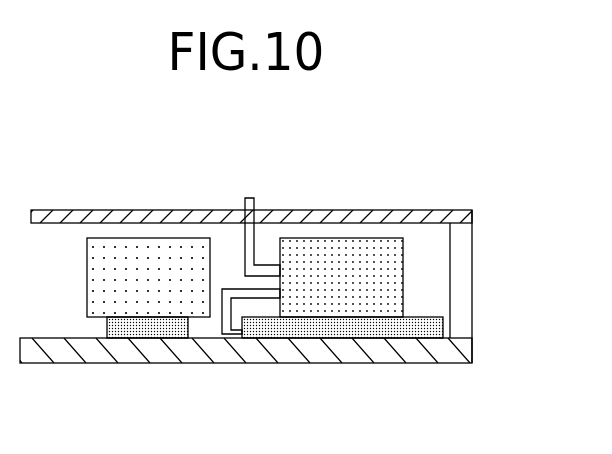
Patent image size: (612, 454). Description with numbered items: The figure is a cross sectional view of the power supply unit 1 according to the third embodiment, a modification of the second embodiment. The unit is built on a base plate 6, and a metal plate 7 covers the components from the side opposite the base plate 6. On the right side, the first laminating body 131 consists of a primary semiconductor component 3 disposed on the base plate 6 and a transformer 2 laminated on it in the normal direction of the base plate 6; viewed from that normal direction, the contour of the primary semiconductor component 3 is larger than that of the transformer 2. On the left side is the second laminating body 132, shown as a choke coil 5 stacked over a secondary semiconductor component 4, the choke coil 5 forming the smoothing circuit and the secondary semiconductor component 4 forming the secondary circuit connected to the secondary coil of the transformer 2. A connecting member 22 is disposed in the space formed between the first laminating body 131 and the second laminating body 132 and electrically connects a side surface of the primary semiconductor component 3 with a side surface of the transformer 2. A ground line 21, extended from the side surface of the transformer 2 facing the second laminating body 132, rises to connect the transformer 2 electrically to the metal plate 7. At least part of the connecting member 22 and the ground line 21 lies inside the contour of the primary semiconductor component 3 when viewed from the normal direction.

The power supply unit 1 is at (466, 186).
The transformer 2 is at (341, 262).
The primary semiconductor component 3 is at (348, 328).
The secondary semiconductor component 4 is at (150, 340).
The choke coil 5 is at (128, 260).
The base plate 6 is at (258, 350).
The metal plate 7 is at (163, 216).
The ground line 21 is at (246, 237).
The connecting member 22 is at (222, 327).
The first laminating body 131 is at (318, 237).
The second laminating body 132 is at (96, 236).